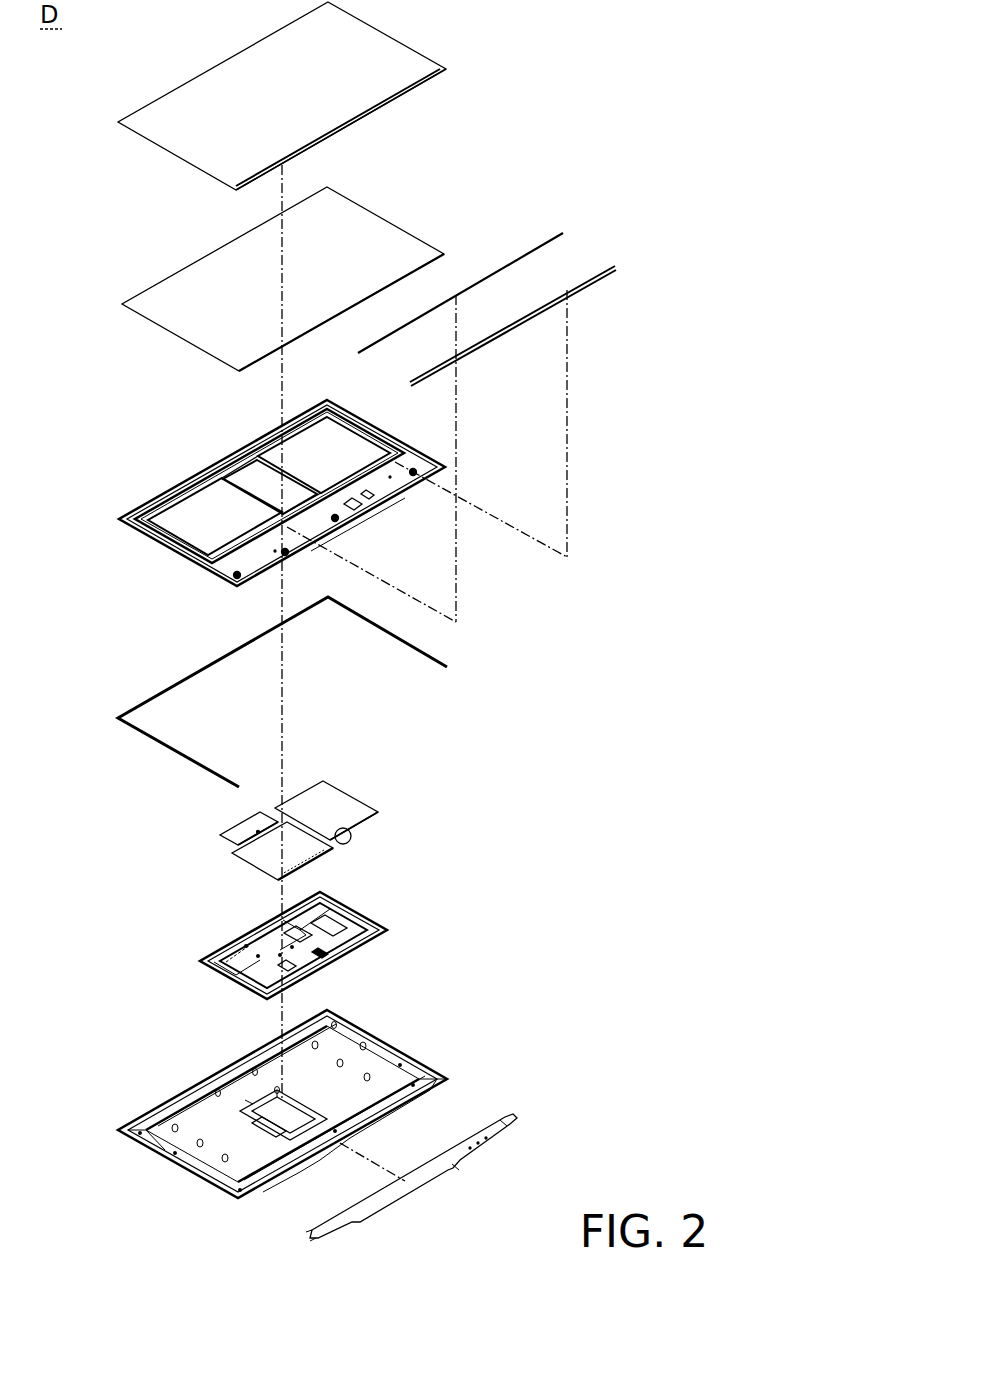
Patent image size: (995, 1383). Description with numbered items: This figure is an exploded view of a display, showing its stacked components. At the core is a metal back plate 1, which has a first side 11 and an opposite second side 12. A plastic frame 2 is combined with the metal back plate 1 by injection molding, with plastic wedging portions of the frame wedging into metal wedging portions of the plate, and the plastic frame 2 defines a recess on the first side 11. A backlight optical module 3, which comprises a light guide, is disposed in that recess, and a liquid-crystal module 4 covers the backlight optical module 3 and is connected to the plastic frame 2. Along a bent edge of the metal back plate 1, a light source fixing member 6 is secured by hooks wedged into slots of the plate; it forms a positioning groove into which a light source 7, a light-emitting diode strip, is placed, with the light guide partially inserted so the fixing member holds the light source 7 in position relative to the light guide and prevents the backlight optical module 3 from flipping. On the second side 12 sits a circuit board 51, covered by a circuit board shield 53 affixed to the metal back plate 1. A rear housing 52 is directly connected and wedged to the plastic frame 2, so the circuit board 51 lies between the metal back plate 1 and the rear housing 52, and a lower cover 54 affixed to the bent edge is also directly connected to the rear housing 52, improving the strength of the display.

The metal back plate 1 is at (241, 507).
The first side 11 is at (122, 520).
The second side 12 is at (244, 506).
The plastic frame 2 is at (119, 717).
The backlight optical module 3 is at (177, 313).
The liquid-crystal module 4 is at (178, 132).
The light source fixing member 6 is at (597, 273).
The light source 7 is at (553, 237).
The circuit board 51 is at (267, 860).
The rear housing 52 is at (138, 1130).
The circuit board shield 53 is at (218, 977).
The lower cover 54 is at (470, 1157).